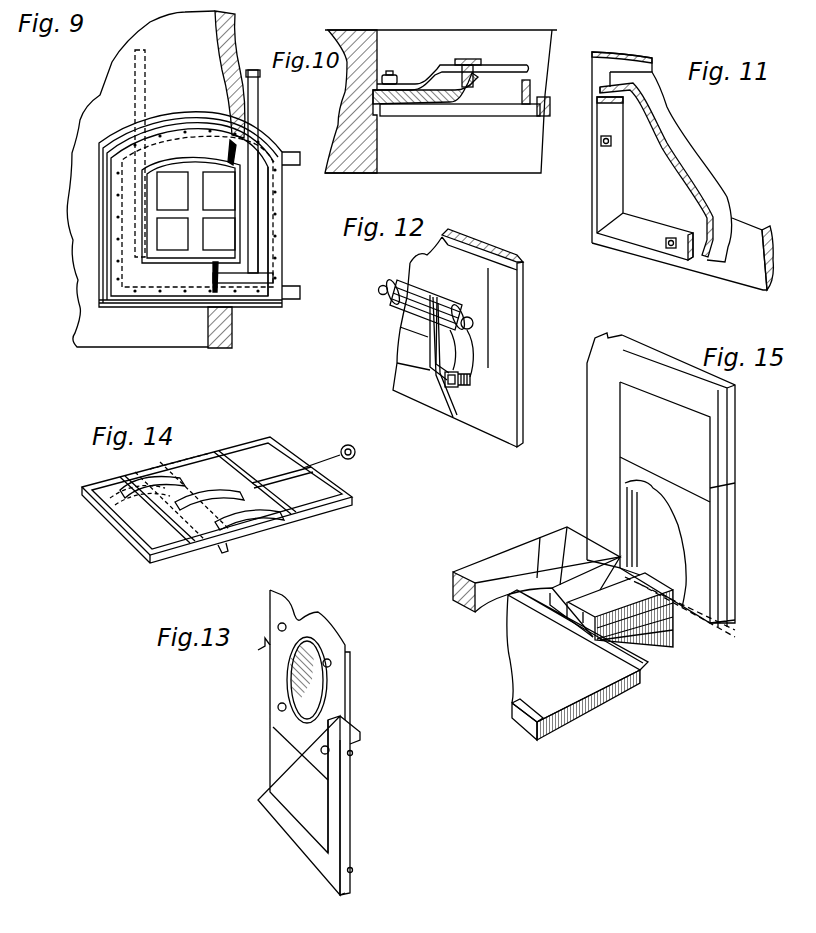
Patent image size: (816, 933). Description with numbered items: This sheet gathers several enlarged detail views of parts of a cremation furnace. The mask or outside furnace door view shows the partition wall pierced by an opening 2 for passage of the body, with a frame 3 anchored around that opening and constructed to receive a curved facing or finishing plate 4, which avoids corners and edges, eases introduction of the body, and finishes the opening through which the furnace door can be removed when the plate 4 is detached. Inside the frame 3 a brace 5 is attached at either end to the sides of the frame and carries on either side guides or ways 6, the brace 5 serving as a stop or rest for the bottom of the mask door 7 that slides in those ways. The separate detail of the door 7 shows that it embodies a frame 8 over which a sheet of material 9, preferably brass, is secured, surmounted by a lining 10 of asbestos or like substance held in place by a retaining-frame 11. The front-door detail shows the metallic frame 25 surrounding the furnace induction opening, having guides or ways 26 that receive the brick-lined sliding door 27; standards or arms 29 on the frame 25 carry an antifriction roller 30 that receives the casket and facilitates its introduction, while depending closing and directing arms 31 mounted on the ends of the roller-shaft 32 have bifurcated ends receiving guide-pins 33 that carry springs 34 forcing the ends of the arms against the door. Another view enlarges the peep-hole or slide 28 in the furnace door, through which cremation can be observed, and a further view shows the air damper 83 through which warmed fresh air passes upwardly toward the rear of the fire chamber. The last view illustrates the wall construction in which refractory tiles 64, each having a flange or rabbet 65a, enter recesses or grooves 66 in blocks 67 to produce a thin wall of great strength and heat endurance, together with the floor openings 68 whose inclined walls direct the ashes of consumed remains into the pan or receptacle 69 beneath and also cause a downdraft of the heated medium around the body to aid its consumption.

In FIG. 9, the opening 2 is at (190, 122).
In FIG. 10, the opening 2 is at (441, 101).
In FIG. 9, the frame 3 is at (276, 218).
In FIG. 10, the frame 3 is at (518, 113).
In FIG. 9, the facing or finishing plate 4 is at (217, 275).
In FIG. 10, the facing or finishing plate 4 is at (432, 104).
In FIG. 9, the brace 5 is at (265, 272).
In FIG. 10, the brace 5 is at (453, 73).
In FIG. 9, the guides or ways 6 is at (143, 88).
In FIG. 10, the guides or ways 6 is at (478, 64).
In FIG. 9, the outside or mask door 7 is at (196, 207).
In FIG. 11, the outside or mask door 7 is at (572, 190).
In FIG. 11, the frame 8 is at (682, 171).
In FIG. 11, the sheet of material 9 is at (704, 168).
In FIG. 11, the lining 10 is at (645, 178).
In FIG. 11, the retaining-frame 11 is at (638, 192).
In FIG. 12, the metallic frame 25 is at (482, 338).
In FIG. 12, the guides or ways 26 is at (521, 263).
In FIG. 12, the brick-lined sliding door 27 is at (455, 342).
In FIG. 12, the standards or arms 29 is at (441, 407).
In FIG. 12, the antifriction device or roller 30 is at (425, 304).
In FIG. 12, the closing and directing arms 31 is at (480, 373).
In FIG. 12, the roller-shaft 32 is at (379, 292).
In FIG. 12, the guide-pins 33 is at (444, 381).
In FIG. 12, the springs 34 is at (466, 387).
In FIG. 14, the damper 83 is at (218, 500).
In FIG. 13, the peep-hole or slide 28 is at (292, 742).
In FIG. 15, the tiles 64 is at (677, 486).
In FIG. 15, the flange or rabbet 65a is at (736, 410).
In FIG. 15, the recesses or grooves 66 is at (606, 338).
In FIG. 15, the blocks 67 is at (604, 450).
In FIG. 15, the openings 68 is at (537, 575).
In FIG. 15, the pan or receptacle 69 is at (590, 712).